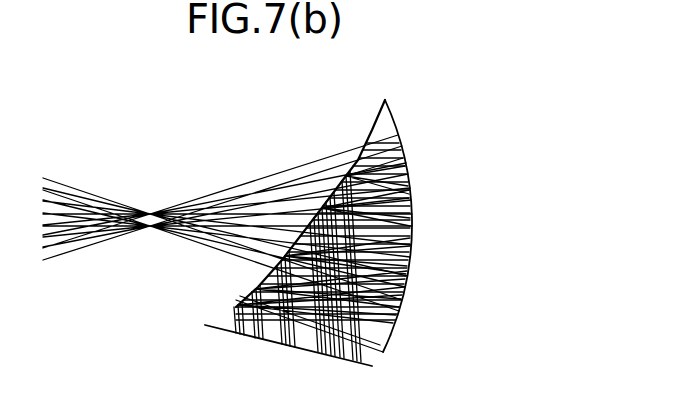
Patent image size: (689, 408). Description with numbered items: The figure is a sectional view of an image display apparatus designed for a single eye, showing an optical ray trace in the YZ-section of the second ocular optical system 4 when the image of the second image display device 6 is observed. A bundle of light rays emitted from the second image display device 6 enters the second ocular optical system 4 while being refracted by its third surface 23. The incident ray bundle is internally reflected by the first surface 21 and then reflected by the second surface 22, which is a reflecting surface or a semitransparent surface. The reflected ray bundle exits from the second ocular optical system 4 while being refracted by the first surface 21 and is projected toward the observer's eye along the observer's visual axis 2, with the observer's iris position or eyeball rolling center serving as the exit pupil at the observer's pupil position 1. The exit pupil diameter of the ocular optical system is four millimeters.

The observer's pupil position 1 is at (148, 210).
The observer's visual axis 2 is at (228, 220).
The second ocular optical system 4 is at (369, 237).
The second image display device 6 is at (263, 340).
The first surface of the second ocular optical system 21 is at (369, 134).
The second surface of the second ocular optical system 22 is at (400, 130).
The third surface of the second ocular optical system 23 is at (378, 350).